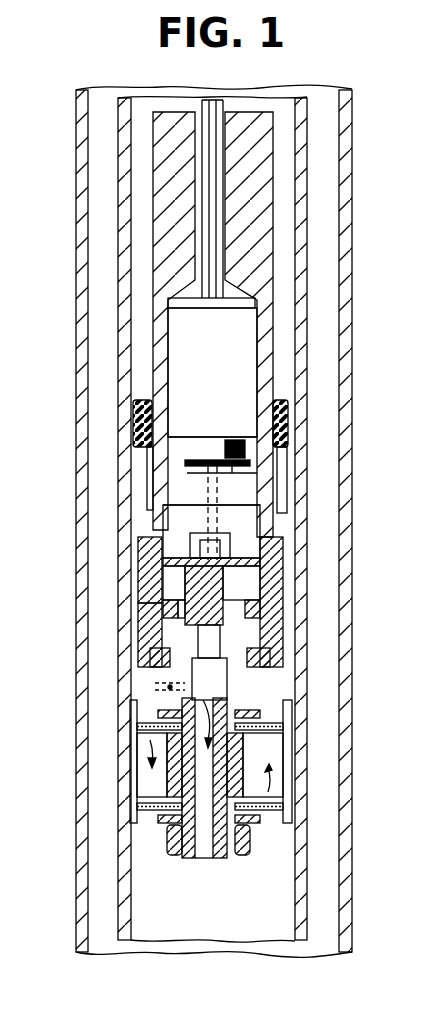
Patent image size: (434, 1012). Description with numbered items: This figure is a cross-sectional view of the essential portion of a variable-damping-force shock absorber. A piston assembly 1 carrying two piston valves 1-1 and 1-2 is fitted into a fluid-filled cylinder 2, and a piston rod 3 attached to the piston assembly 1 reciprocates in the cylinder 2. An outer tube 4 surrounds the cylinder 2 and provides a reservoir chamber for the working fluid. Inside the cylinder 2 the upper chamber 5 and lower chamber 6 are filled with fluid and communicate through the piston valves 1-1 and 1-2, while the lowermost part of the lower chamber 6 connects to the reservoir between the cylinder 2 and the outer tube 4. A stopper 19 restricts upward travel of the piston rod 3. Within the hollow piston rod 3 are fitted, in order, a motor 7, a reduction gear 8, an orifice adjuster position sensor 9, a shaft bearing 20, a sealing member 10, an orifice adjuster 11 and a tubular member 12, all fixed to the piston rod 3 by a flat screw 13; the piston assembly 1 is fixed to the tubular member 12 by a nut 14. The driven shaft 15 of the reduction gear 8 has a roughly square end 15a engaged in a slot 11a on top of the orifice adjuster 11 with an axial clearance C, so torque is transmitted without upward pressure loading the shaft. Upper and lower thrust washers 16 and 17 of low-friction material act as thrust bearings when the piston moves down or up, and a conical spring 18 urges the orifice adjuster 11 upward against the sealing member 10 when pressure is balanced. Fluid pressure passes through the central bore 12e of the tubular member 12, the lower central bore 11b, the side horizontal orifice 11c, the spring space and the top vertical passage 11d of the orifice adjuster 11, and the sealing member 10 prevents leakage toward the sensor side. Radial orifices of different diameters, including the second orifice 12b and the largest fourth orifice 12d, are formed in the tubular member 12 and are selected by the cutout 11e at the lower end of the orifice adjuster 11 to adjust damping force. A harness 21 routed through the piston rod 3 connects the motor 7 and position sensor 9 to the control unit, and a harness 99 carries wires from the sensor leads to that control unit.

The piston assembly 1 is at (287, 752).
The cylinder 2 is at (297, 150).
The piston rod 3 is at (308, 137).
The outer tube 4 is at (352, 166).
The upper chamber 5 is at (287, 333).
The lower chamber 6 is at (275, 885).
The motor 7 is at (250, 370).
The reduction gear 8 is at (270, 464).
The orifice adjuster position sensor 9 is at (245, 490).
The sealing member 10 is at (255, 562).
The orifice adjuster 11 is at (250, 590).
The slot 11a is at (211, 531).
The lower central bore 11b is at (222, 688).
The side horizontal orifice 11c is at (173, 632).
The top vertical passage 11d is at (178, 566).
The cutout 11e is at (170, 687).
The tubular member 12 is at (280, 621).
The second orifice 12b is at (290, 690).
The fourth orifice 12d is at (190, 668).
The central bore 12e is at (222, 792).
The flat screw 13 is at (280, 660).
The nut 14 is at (255, 842).
The driven shaft 15 is at (205, 500).
The roughly square shape 15a is at (150, 500).
The upper thrust washer 16 is at (185, 585).
The lower thrust washer 17 is at (190, 600).
The conical spring 18 is at (185, 612).
The stopper 19 is at (290, 418).
The shaft bearing 20 is at (247, 517).
The harness 21 is at (210, 218).
The harness 99 is at (148, 452).
The clearance C is at (237, 538).
The piston valve 1-1 is at (282, 727).
The piston valve 1-2 is at (133, 838).